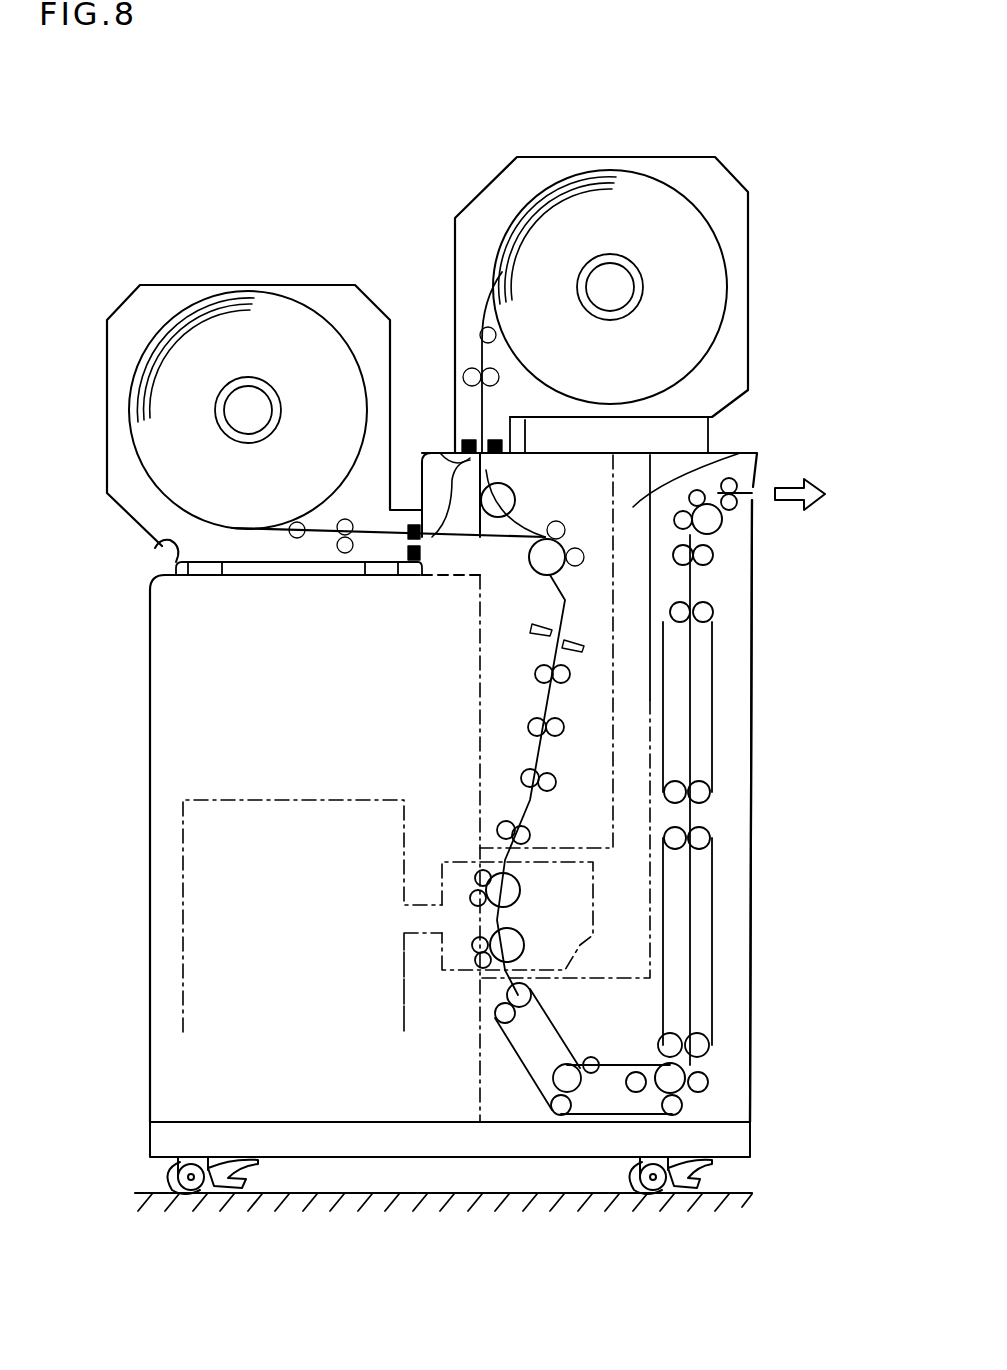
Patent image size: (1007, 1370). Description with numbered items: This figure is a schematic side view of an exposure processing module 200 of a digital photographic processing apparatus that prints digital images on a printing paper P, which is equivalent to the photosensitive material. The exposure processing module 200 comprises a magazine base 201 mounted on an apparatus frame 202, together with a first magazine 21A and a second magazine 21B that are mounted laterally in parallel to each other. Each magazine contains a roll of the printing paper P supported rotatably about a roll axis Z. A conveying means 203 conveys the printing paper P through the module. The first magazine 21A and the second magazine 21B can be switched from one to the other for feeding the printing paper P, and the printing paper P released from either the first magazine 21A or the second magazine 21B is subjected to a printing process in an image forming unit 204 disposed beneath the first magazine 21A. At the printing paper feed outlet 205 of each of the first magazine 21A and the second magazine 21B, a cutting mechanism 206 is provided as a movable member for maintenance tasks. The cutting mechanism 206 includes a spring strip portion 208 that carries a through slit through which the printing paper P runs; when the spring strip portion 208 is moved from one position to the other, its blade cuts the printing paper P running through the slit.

The exposure processing module 200 is at (336, 170).
The magazine base 201 is at (152, 543).
The apparatus frame 202 is at (755, 753).
The conveying means 203 is at (740, 453).
The image forming unit 204 is at (293, 800).
The printing paper feed outlet 205 is at (436, 450).
The cutting mechanism 206 is at (490, 445).
The spring strip portion 208 is at (465, 432).
The first magazine 21A is at (305, 285).
The second magazine 21B is at (535, 156).
The roll axis Z is at (247, 410).
The printing paper P is at (462, 540).